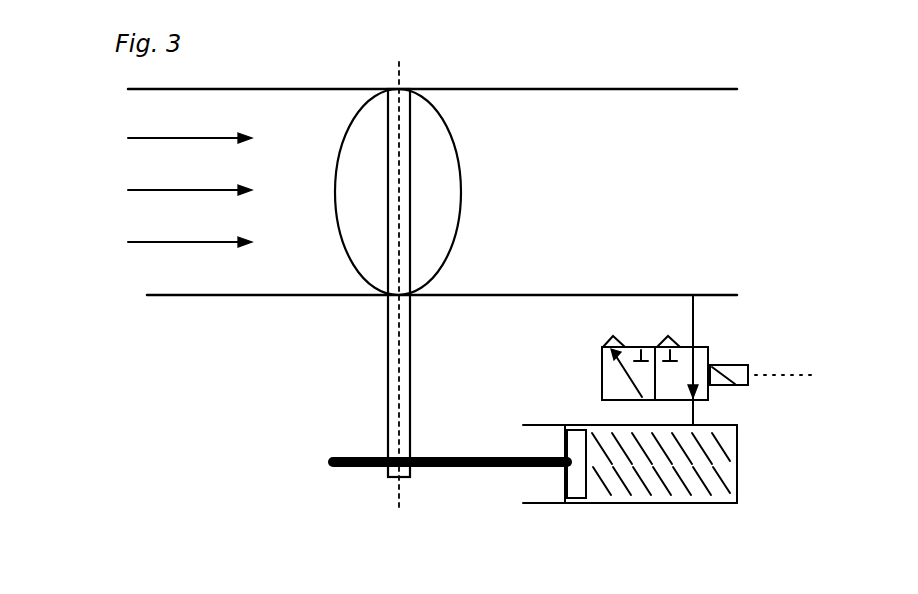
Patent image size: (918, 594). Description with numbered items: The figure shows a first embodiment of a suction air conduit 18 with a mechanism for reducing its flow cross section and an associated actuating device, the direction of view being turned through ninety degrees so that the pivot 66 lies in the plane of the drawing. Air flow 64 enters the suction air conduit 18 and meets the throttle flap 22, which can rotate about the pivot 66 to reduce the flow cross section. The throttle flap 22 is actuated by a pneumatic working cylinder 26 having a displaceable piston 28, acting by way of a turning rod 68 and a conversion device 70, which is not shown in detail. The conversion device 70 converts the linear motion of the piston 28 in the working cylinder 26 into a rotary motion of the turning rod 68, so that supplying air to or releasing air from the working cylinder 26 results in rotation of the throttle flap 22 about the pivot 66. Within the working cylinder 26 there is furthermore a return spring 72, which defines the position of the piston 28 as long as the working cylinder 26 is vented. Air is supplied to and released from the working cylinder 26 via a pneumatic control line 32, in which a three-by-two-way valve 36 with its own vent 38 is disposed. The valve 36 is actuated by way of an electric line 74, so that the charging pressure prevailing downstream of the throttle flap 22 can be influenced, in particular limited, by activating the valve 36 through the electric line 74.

The suction air conduit 18 is at (240, 297).
The throttle flap 22 is at (460, 185).
The pneumatic working cylinder 26 is at (738, 482).
The piston 28 is at (575, 482).
The pneumatic control line 32 is at (698, 328).
The 3/2-way valve 36 is at (600, 358).
The vent 38 is at (608, 338).
The gas flow 64 is at (136, 242).
The pivot 66 is at (403, 74).
The turning rod 68 is at (388, 353).
The conversion device 70 is at (380, 492).
The return spring 72 is at (672, 478).
The electric line 74 is at (772, 380).